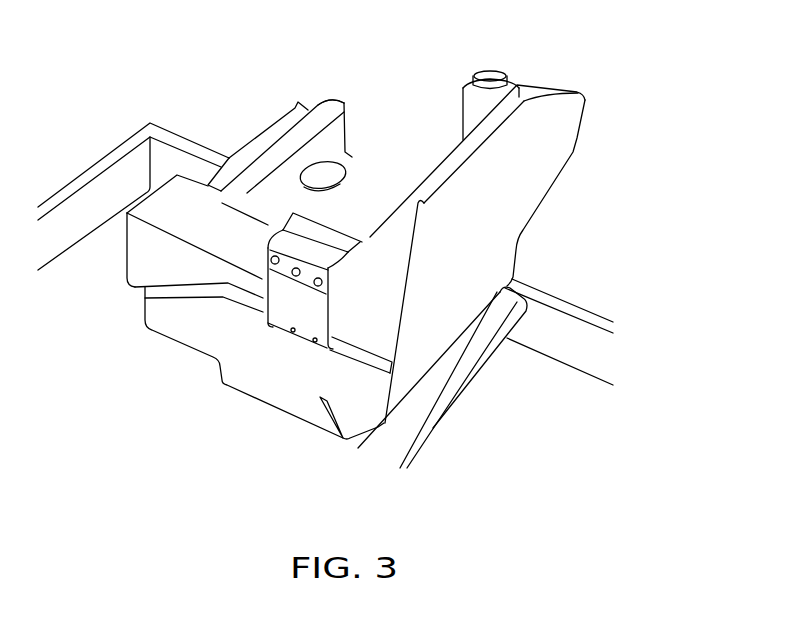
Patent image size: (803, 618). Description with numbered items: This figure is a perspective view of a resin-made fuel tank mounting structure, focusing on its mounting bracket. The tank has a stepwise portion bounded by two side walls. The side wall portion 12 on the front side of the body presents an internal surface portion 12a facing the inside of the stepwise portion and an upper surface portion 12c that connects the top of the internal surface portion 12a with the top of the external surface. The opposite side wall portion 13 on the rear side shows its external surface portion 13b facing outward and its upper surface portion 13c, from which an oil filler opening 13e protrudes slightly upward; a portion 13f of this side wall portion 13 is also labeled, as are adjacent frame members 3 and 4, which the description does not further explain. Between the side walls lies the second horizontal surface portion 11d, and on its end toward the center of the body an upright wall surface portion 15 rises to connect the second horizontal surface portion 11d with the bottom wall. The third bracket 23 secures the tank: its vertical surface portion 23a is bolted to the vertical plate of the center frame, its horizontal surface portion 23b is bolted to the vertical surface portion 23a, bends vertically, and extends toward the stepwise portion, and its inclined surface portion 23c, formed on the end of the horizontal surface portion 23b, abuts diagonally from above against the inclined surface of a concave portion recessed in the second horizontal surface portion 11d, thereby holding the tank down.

The front cross member 3 is at (458, 390).
The rear cross member 4 is at (575, 307).
The second horizontal surface portion 11d is at (378, 180).
The side wall portion 12 is at (338, 88).
The internal surface portion 12a is at (340, 130).
The upper surface portion 12c is at (325, 112).
The side wall portion 13 is at (593, 105).
The external surface portion 13b is at (548, 153).
The upper surface portion 13c is at (520, 101).
The oil filler opening 13e is at (483, 72).
The tank top corner portion 13f is at (570, 107).
The upright wall surface portion 15 is at (253, 372).
The third bracket 23 is at (276, 305).
The vertical surface portion 23a is at (293, 298).
The horizontal surface portion 23b is at (298, 248).
The inclined surface portion 23c is at (340, 247).